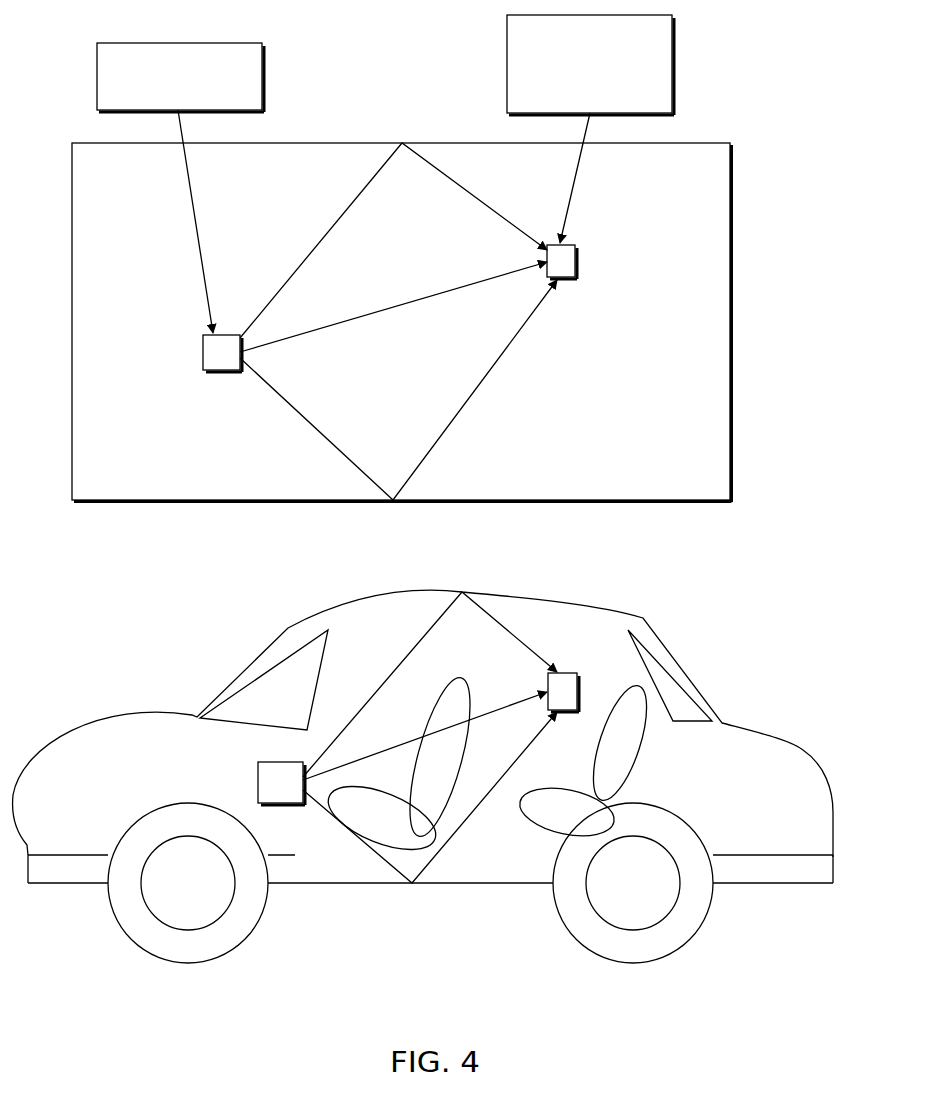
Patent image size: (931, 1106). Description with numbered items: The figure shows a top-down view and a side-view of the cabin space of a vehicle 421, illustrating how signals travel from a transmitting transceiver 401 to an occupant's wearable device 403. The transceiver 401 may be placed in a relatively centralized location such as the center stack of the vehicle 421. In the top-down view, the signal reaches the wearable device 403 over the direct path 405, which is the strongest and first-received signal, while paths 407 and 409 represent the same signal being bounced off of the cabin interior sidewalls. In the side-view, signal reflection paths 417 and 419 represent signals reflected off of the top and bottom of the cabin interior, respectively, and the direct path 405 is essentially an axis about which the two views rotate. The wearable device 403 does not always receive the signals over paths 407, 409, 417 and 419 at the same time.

The transmitting transceiver 401 is at (217, 372).
The wearable device 403 is at (577, 260).
The direct path 405 is at (345, 323).
The reflected path 407 is at (422, 153).
The reflected path 409 is at (377, 488).
The signal reflection path 417 is at (513, 638).
The signal reflection path 419 is at (392, 870).
The vehicle 421 is at (740, 757).